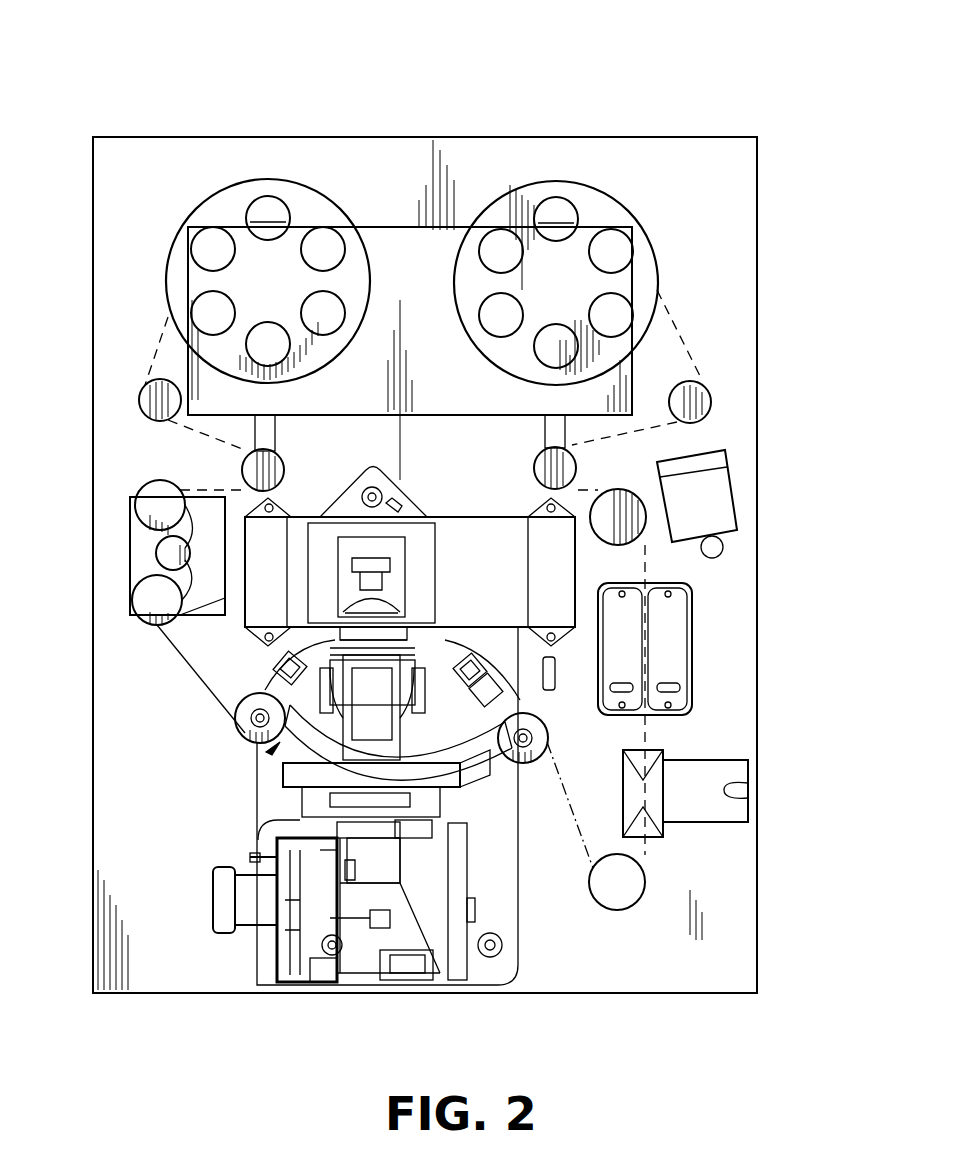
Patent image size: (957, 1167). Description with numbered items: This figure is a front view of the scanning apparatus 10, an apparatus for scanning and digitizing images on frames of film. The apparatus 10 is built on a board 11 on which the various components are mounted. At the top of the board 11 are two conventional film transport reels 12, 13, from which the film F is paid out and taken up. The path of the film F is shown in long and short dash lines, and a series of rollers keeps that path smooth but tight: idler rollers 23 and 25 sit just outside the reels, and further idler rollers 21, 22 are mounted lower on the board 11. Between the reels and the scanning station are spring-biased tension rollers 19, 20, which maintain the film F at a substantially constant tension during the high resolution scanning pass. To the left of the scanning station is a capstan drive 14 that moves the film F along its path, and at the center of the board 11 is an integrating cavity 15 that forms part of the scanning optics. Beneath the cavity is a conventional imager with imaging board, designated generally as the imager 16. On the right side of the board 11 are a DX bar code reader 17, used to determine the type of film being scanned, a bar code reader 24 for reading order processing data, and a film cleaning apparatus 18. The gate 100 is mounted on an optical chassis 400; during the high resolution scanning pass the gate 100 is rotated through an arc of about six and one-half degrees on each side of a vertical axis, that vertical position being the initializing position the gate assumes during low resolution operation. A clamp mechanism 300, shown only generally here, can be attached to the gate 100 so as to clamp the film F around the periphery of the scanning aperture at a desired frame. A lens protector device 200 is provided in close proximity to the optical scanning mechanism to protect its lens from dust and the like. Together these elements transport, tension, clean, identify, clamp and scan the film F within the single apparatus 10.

The scanning apparatus 10 is at (627, 90).
The board 11 is at (163, 166).
The film transport reel 12 is at (636, 236).
The film transport reel 13 is at (177, 277).
The capstan drive 14 is at (120, 578).
The integrating cavity 15 is at (430, 662).
The imager with imaging board 16 is at (255, 962).
The DX bar code reader 17 is at (668, 833).
The film cleaning apparatus 18 is at (695, 660).
The spring-biased tension roller 19 is at (250, 470).
The spring-biased tension roller 20 is at (566, 472).
The idler roller 21 is at (630, 892).
The idler roller 22 is at (622, 540).
The idler roller 23 is at (139, 400).
The bar code reader 24 is at (740, 528).
The idler roller 25 is at (712, 402).
The gate 100 is at (262, 758).
The lens protector device 200 is at (465, 812).
The clamp mechanism 300 is at (300, 806).
The optical chassis 400 is at (418, 488).
The film F is at (185, 700).